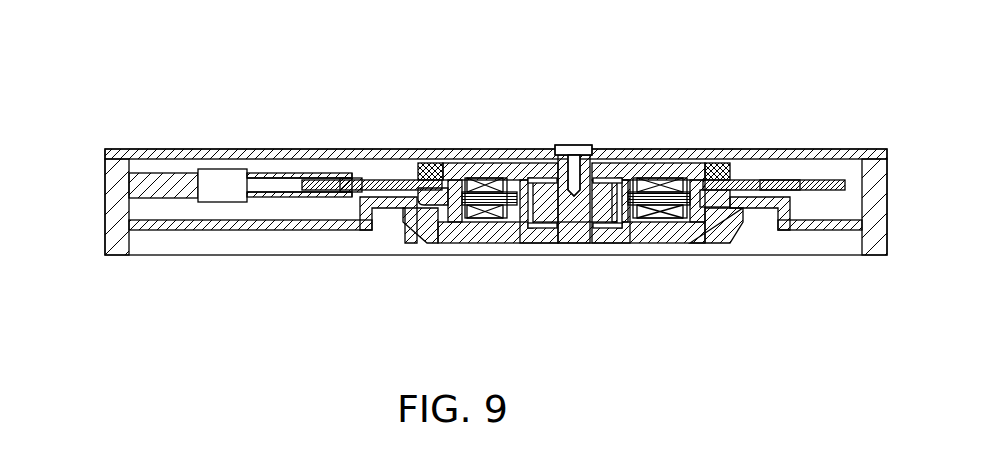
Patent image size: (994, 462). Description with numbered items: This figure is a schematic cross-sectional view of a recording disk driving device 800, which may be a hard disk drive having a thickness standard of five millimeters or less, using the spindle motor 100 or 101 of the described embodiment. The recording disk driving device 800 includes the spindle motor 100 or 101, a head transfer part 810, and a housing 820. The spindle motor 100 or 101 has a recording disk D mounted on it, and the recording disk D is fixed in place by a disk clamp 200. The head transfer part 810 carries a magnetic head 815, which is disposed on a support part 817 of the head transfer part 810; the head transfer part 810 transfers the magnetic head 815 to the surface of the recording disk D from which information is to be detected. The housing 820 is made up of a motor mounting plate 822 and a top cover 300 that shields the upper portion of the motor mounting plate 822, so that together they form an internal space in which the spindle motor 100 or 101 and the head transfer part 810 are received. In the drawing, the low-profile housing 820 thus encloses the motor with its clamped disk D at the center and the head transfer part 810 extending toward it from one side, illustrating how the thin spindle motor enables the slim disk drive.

The housing 820 is at (100, 167).
The motor mounting plate 822 is at (873, 245).
The head transfer part 810 is at (222, 205).
The support part 817 is at (300, 196).
The magnetic head 815 is at (356, 196).
The recording disk driving device 800 is at (510, 113).
The spindle motor 100 is at (608, 143).
The spindle motor 101 is at (573, 170).
The disk clamp 200 is at (713, 152).
The top cover 300 is at (828, 150).
The recording disk D is at (780, 150).